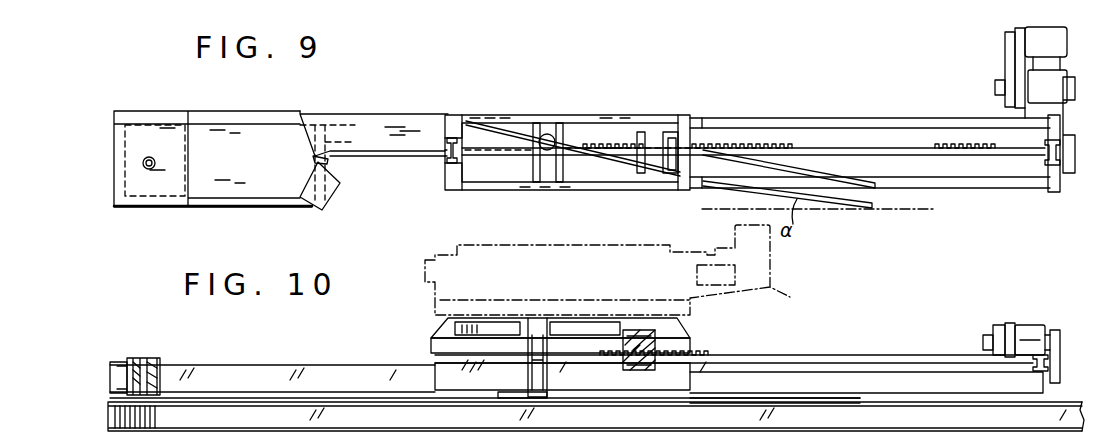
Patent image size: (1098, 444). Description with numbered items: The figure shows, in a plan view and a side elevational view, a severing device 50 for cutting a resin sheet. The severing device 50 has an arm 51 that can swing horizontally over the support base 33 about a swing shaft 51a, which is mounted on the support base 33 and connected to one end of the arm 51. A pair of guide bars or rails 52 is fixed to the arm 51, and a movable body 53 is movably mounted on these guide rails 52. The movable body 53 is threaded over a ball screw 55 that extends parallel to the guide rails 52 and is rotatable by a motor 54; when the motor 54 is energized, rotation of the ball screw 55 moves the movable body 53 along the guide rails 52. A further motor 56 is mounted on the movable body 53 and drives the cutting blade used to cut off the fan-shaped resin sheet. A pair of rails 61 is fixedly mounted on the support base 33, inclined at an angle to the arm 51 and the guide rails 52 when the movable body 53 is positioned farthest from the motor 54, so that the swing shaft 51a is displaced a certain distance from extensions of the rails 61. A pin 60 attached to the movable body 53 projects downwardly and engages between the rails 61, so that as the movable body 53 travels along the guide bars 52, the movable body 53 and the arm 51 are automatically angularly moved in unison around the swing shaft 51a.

In FIG. 10, the support base 33 is at (373, 416).
In FIG. 9, the severing device 50 is at (318, 95).
In FIG. 9, the arm 51 is at (385, 113).
In FIG. 10, the arm 51 is at (253, 376).
In FIG. 9, the swing shaft 51a is at (156, 163).
In FIG. 10, the swing shaft 51a is at (140, 358).
In FIG. 9, the guide bars or rails 52 is at (733, 117).
In FIG. 9, the movable body 53 is at (573, 130).
In FIG. 10, the movable body 53 is at (568, 347).
In FIG. 9, the motor 54 is at (1035, 50).
In FIG. 10, the motor 54 is at (1027, 337).
In FIG. 9, the ball screw 55 is at (912, 147).
In FIG. 10, the ball screw 55 is at (857, 355).
In FIG. 10, the motor 56 is at (760, 265).
In FIG. 9, the pin 60 is at (545, 136).
In FIG. 10, the pin 60 is at (545, 378).
In FIG. 9, the rails 61 is at (790, 166).
In FIG. 10, the rails 61 is at (765, 402).